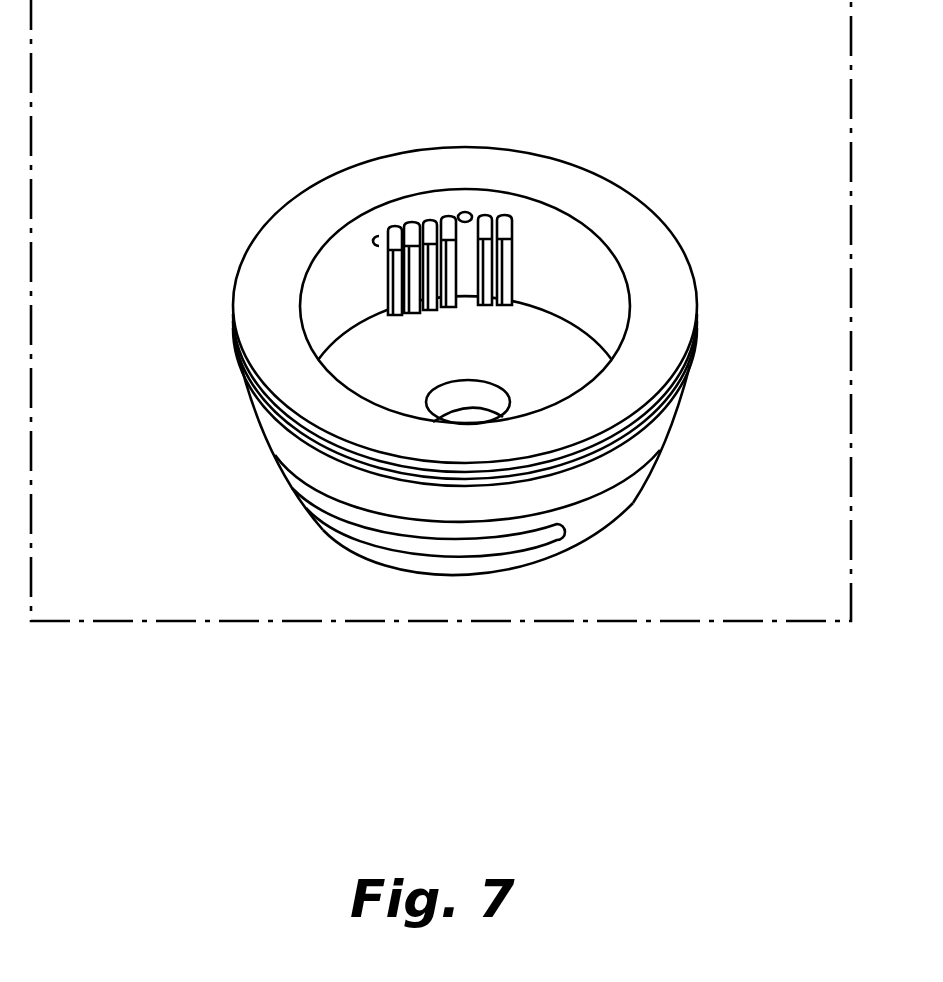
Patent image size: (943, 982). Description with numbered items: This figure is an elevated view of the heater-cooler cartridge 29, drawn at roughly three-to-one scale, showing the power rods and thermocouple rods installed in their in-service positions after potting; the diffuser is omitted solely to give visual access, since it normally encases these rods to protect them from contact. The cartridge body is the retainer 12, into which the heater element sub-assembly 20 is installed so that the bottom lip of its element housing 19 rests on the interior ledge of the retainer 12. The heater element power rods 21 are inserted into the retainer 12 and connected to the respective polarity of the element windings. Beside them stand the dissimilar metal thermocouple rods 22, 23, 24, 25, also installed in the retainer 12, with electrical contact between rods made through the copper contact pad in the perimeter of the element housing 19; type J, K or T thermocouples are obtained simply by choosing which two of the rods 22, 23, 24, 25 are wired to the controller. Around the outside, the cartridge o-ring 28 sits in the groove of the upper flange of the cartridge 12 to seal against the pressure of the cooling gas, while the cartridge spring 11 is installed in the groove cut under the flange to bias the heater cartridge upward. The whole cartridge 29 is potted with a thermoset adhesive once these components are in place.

The cartridge spring 11 is at (345, 524).
The retainer 12 is at (633, 505).
The element housing 19 is at (355, 326).
The heater element sub-assembly 20 is at (350, 306).
The power connection rods 21 is at (486, 213).
The dissimilar metal rod 22 is at (383, 228).
The dissimilar metal rod 23 is at (428, 218).
The dissimilar metal rod 24 is at (410, 220).
The dissimilar metal rod 25 is at (447, 215).
The cartridge o-ring 28 is at (696, 312).
The heater-cooler cartridge 29 is at (441, 357).